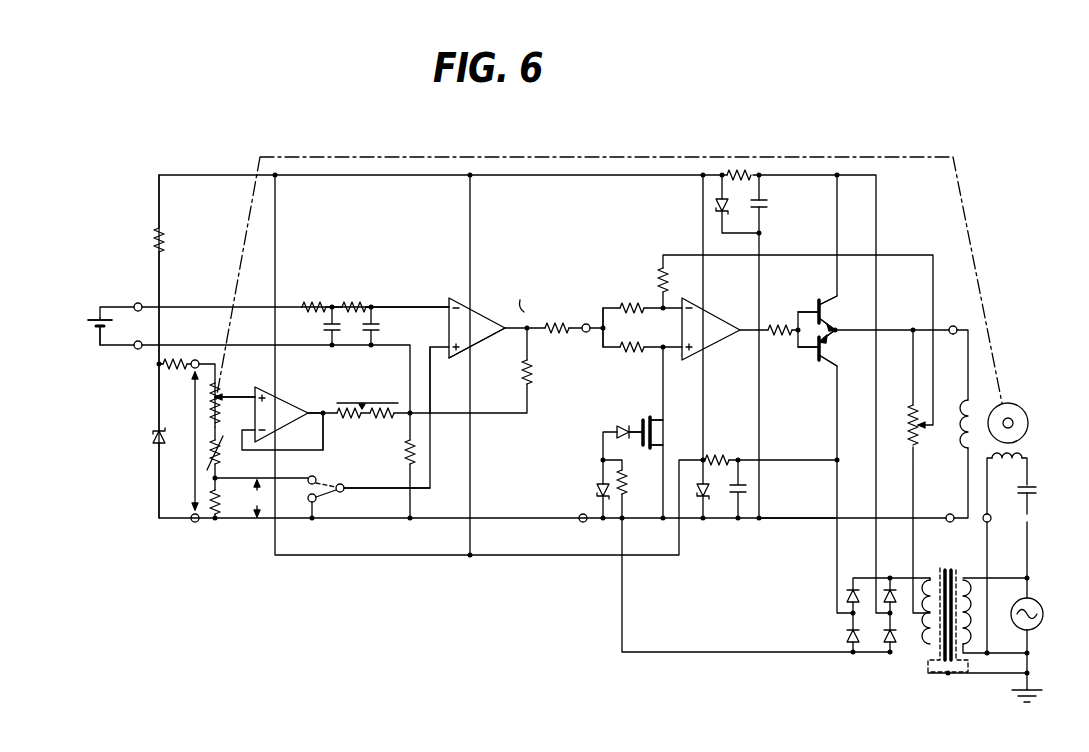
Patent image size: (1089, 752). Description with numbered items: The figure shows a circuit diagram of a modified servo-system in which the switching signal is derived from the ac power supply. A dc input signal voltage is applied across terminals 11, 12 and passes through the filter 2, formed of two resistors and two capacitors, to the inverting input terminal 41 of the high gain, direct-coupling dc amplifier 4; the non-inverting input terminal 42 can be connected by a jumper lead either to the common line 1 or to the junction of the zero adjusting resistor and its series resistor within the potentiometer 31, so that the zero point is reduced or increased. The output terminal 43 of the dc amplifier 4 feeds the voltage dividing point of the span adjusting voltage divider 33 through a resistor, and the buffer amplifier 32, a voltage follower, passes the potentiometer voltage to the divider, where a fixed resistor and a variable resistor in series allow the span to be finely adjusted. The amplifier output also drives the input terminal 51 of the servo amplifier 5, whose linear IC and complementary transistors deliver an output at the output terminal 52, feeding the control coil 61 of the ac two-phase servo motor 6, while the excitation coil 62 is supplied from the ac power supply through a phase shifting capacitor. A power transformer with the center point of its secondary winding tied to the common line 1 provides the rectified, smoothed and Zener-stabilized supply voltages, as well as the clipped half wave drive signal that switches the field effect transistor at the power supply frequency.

The common line 1 is at (784, 520).
The filter 2 is at (368, 285).
The dc amplifier 4 is at (518, 290).
The servo amplifier 5 is at (636, 274).
The ac 2-phase servo motor 6 is at (1014, 422).
The terminal 11 is at (138, 303).
The terminal 12 is at (139, 349).
The potentiometer 31 is at (159, 414).
The buffer amplifier 32 is at (310, 412).
The span adjusting voltage divider 33 is at (387, 502).
The inverting input terminal 41 is at (440, 308).
The non-inverting input terminal 42 is at (446, 380).
The output terminal 43 is at (484, 346).
The input terminal 51 is at (586, 324).
The output terminal 52 is at (954, 324).
The control coil 61 is at (966, 424).
The excitation coil 62 is at (1018, 462).